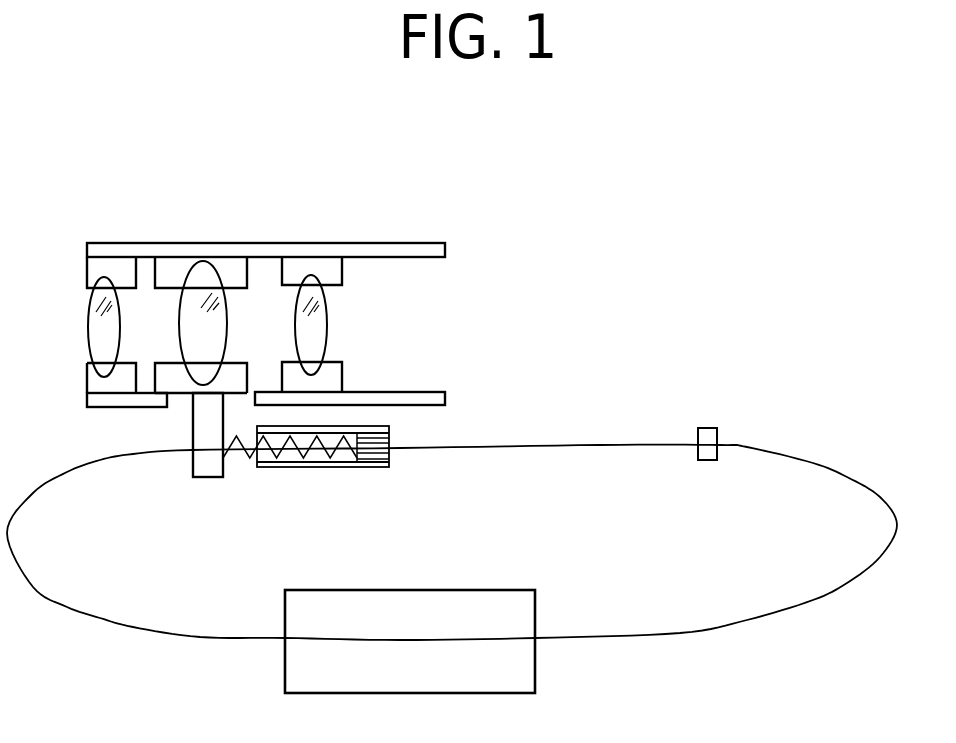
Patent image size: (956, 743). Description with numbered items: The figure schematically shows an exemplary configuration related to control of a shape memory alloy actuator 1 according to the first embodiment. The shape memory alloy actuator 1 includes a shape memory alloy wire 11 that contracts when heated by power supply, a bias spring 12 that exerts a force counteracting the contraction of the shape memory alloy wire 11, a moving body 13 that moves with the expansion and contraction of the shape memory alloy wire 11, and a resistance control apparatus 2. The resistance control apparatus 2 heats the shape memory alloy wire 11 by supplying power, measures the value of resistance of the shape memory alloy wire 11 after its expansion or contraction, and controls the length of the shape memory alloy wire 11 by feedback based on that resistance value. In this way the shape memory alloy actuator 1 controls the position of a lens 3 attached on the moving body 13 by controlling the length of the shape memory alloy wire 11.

The shape memory alloy actuator 1 is at (402, 470).
The resistance control apparatus 2 is at (339, 590).
The lens 3 is at (204, 262).
The shape memory alloy wire 11 is at (597, 445).
The bias spring 12 is at (352, 438).
The moving body 13 is at (207, 479).